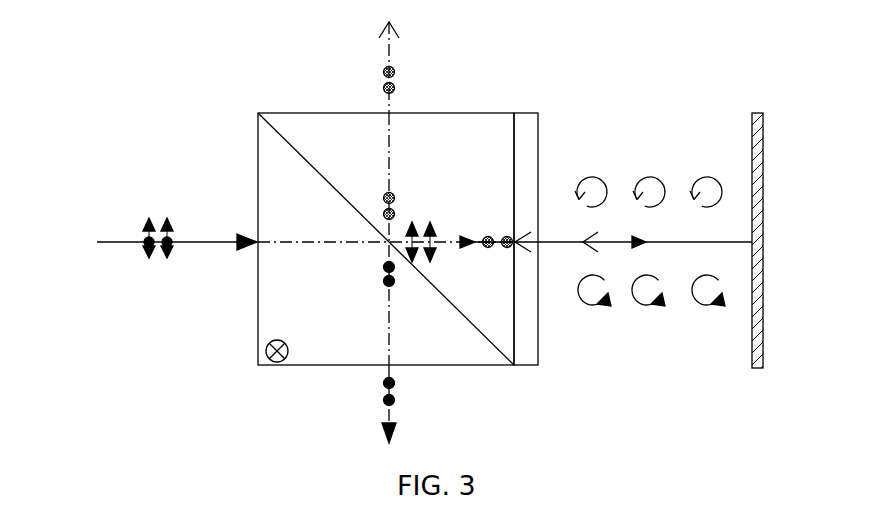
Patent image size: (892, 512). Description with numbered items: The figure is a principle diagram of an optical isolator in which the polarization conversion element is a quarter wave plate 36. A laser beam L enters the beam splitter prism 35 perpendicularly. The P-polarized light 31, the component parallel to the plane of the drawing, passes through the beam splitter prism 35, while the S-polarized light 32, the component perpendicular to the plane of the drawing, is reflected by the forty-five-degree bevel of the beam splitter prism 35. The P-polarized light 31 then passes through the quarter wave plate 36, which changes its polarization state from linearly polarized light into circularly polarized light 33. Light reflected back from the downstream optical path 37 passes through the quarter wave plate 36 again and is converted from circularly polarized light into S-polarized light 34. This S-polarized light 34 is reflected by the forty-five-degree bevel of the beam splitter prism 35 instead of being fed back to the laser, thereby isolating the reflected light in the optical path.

The laser beam L is at (112, 248).
The P-polarized light 31 is at (441, 243).
The S-polarized light 32 is at (395, 388).
The circularly polarized light 33 is at (645, 252).
The S-polarized light 34 is at (400, 203).
The beam splitter prism 35 is at (258, 367).
The quarter wave plate 36 is at (538, 113).
The downstream optical path 37 is at (756, 113).